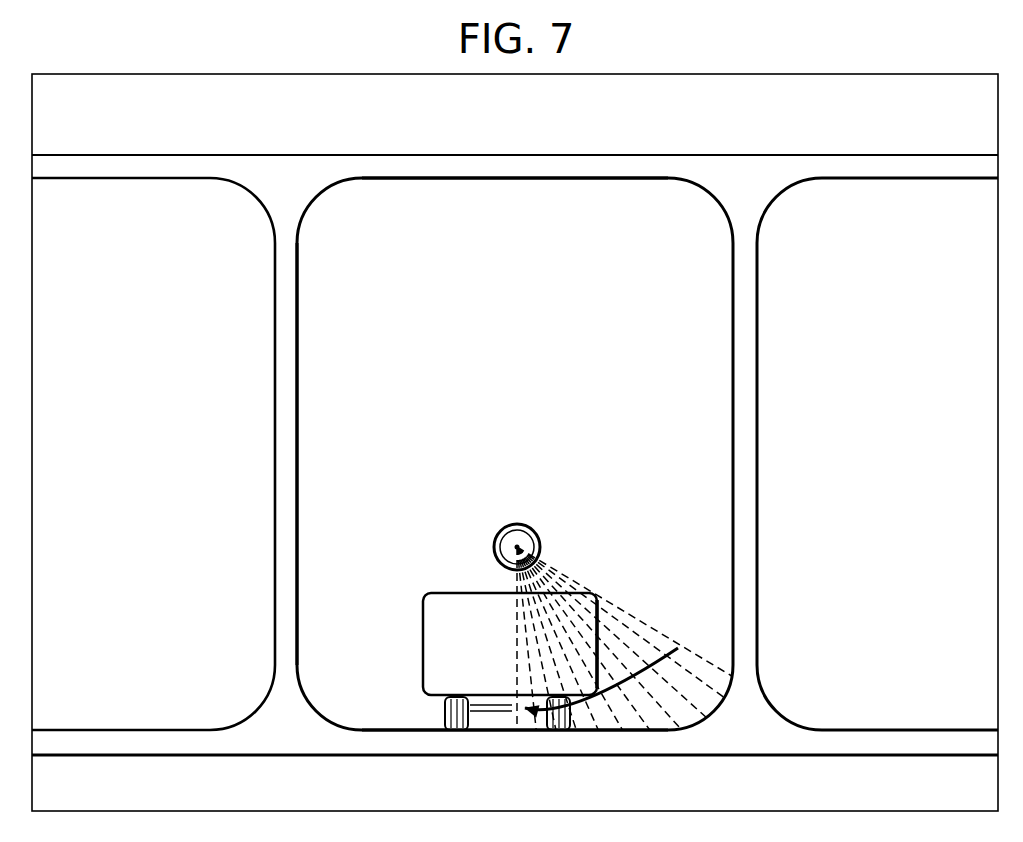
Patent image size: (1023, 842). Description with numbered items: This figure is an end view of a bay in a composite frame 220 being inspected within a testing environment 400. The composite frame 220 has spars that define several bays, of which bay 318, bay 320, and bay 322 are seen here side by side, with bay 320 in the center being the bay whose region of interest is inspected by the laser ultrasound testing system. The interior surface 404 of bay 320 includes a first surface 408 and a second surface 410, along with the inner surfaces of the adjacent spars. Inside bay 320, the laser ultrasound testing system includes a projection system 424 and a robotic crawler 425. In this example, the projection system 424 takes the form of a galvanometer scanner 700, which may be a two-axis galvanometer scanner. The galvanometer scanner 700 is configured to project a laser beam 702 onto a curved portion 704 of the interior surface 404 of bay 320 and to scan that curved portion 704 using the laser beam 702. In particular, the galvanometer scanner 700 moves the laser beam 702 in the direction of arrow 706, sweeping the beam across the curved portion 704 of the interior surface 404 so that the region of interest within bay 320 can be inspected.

The testing environment 400 is at (295, 72).
The composite frame 220 is at (772, 140).
The bay 318 is at (133, 465).
The bay 320 is at (495, 379).
The bay 322 is at (858, 466).
The interior surface 404 is at (303, 359).
The first surface 408 is at (513, 180).
The second surface 410 is at (388, 729).
The projection system 424 is at (543, 519).
The robotic crawler 425 is at (422, 645).
The galvanometer scanner 700 is at (494, 548).
The laser beam 702 is at (624, 596).
The curved portion 704 is at (688, 718).
The arrow 706 is at (668, 648).